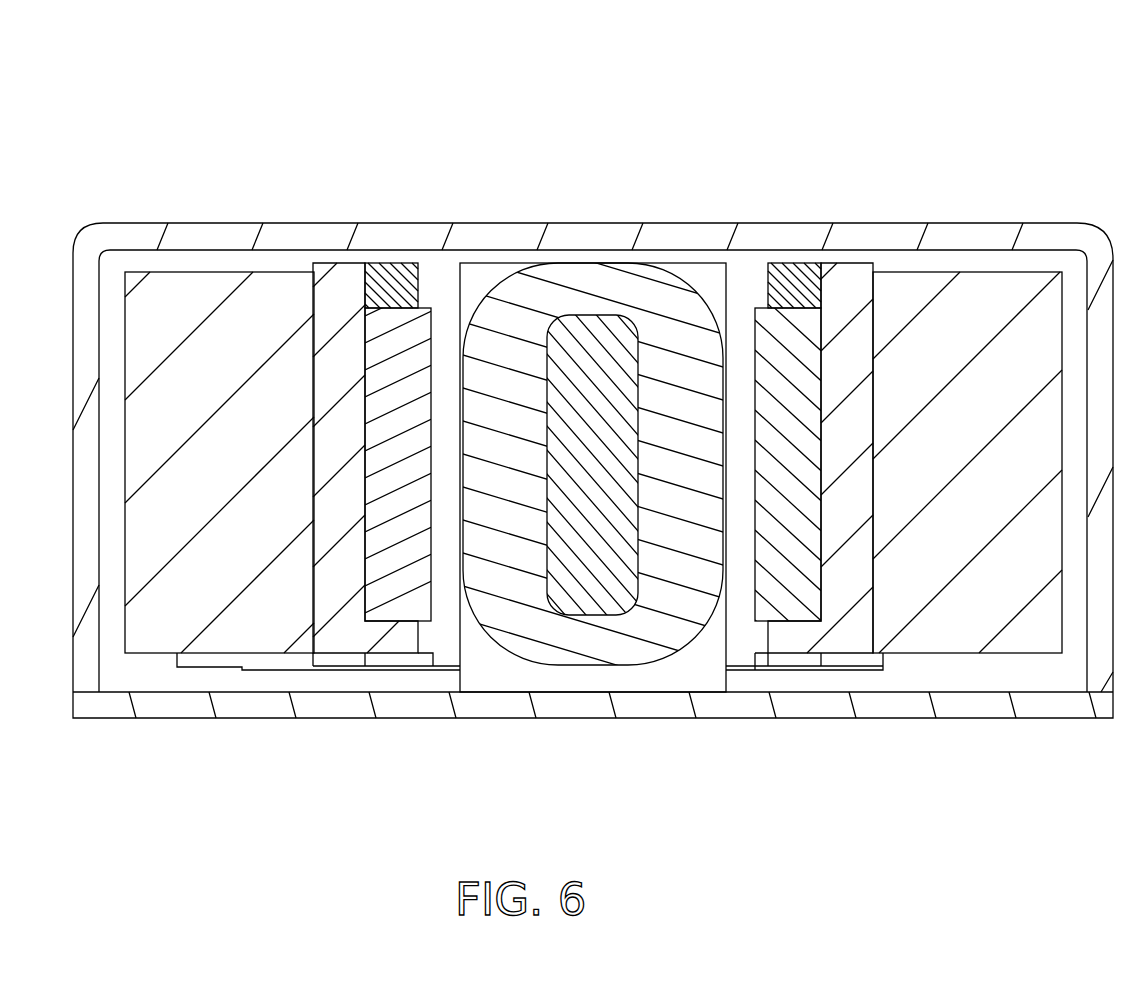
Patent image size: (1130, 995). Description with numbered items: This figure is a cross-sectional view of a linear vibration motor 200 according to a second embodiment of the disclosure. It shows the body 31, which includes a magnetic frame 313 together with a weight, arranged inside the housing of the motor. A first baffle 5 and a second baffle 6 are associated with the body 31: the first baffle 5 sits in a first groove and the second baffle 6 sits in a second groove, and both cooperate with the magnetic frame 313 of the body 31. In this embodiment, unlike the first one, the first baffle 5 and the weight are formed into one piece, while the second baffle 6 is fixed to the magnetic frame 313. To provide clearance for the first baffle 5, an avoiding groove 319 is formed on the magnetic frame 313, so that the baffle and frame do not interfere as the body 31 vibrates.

The sound producing device 200 is at (637, 40).
The second baffle 6 is at (797, 266).
The first baffle 5 is at (805, 625).
The magnetic frame 313 is at (845, 577).
The body 31 is at (1026, 790).
The avoiding groove 319 is at (337, 660).